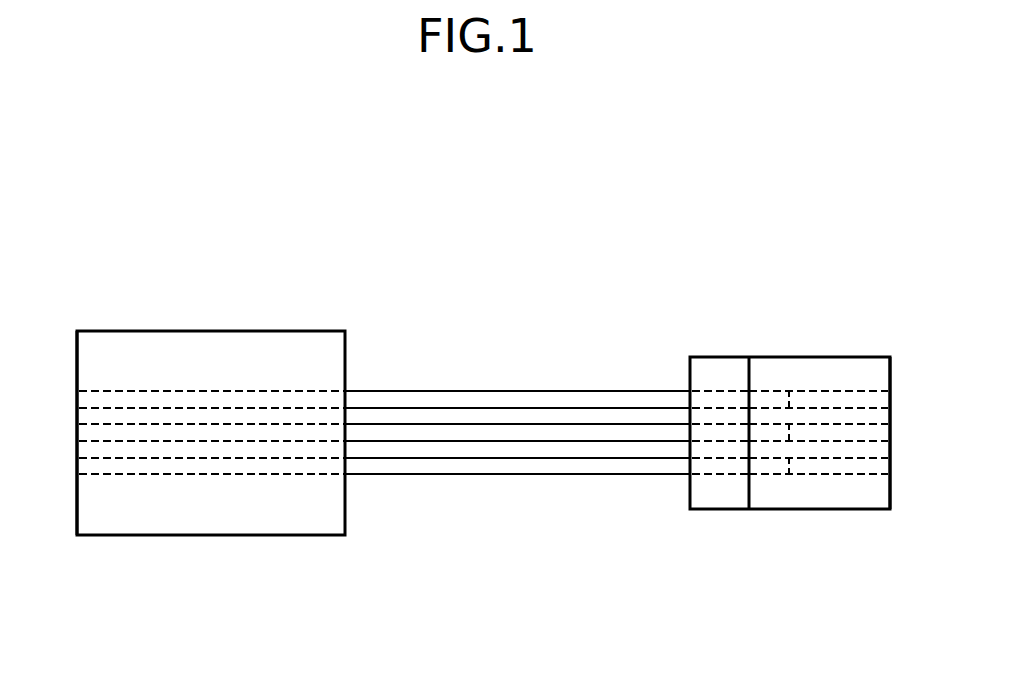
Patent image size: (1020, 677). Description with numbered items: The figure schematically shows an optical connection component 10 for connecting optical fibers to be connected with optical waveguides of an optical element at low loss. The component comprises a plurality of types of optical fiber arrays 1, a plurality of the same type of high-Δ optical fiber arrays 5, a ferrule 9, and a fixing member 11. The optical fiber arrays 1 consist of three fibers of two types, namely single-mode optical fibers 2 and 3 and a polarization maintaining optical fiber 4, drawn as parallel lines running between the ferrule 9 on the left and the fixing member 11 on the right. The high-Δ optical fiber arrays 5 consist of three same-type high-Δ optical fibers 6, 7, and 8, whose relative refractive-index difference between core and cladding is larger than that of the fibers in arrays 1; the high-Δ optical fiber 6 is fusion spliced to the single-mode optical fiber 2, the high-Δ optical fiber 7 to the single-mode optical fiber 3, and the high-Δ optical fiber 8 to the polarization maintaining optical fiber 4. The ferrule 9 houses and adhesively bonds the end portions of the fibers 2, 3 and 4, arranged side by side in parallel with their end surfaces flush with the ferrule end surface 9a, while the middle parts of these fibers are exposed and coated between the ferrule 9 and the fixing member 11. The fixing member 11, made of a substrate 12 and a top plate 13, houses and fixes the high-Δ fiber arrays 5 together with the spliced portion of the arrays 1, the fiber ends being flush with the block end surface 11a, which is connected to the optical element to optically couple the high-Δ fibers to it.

The plurality of types of optical fiber arrays 1 is at (575, 587).
The single-mode optical fiber 2 is at (473, 400).
The single-mode optical fiber 3 is at (560, 467).
The polarization maintaining optical fiber 4 is at (517, 430).
The plurality of the same type of high-Δ optical fiber arrays 5 is at (885, 587).
The high-Δ optical fiber 6 is at (808, 400).
The high-Δ optical fiber 7 is at (870, 465).
The high-Δ optical fiber 8 is at (827, 432).
The ferrule 9 is at (209, 331).
The ferrule end surface 9a is at (77, 487).
The optical connection component 10 is at (728, 145).
The fixing member 11 is at (842, 280).
The block end surface 11a is at (890, 487).
The substrate 12 is at (718, 368).
The top plate 13 is at (818, 368).